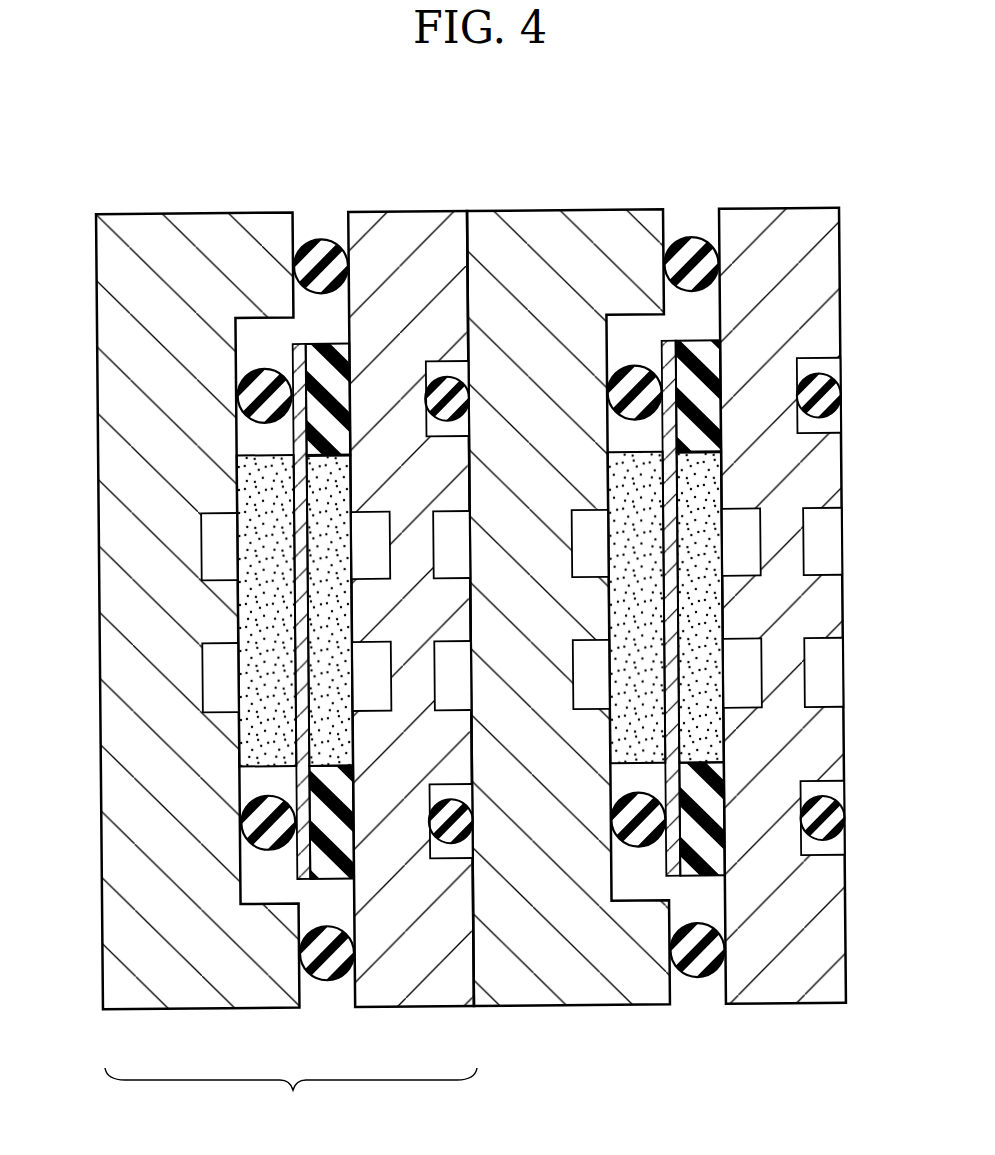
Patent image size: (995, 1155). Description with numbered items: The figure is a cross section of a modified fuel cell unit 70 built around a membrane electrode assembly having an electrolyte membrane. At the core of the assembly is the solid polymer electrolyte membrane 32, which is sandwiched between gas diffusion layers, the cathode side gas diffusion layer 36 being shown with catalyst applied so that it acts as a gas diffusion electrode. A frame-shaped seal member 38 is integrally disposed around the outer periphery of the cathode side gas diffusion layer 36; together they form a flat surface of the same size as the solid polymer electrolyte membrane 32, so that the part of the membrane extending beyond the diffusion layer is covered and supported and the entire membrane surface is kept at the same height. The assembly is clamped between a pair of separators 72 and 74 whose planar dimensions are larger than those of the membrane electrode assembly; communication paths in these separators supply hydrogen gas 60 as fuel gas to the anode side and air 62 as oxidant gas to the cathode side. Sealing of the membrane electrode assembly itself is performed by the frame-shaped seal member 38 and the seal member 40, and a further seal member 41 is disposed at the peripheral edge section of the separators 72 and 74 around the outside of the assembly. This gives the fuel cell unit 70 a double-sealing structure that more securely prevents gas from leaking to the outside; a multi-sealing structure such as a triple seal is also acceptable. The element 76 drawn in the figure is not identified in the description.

The solid polymer electrolyte membrane 32 is at (672, 362).
The cathode side gas diffusion layer 36 is at (700, 487).
The frame-shaped seal member 38 is at (725, 773).
The seal member 40 is at (267, 392).
The seal member 41 is at (322, 248).
The hydrogen gas 60 is at (213, 533).
The air 62 is at (367, 550).
The fuel cell unit 70 is at (291, 1097).
The separator 72 is at (242, 992).
The separator 74 is at (801, 218).
The coolant flow channel 76 is at (445, 680).